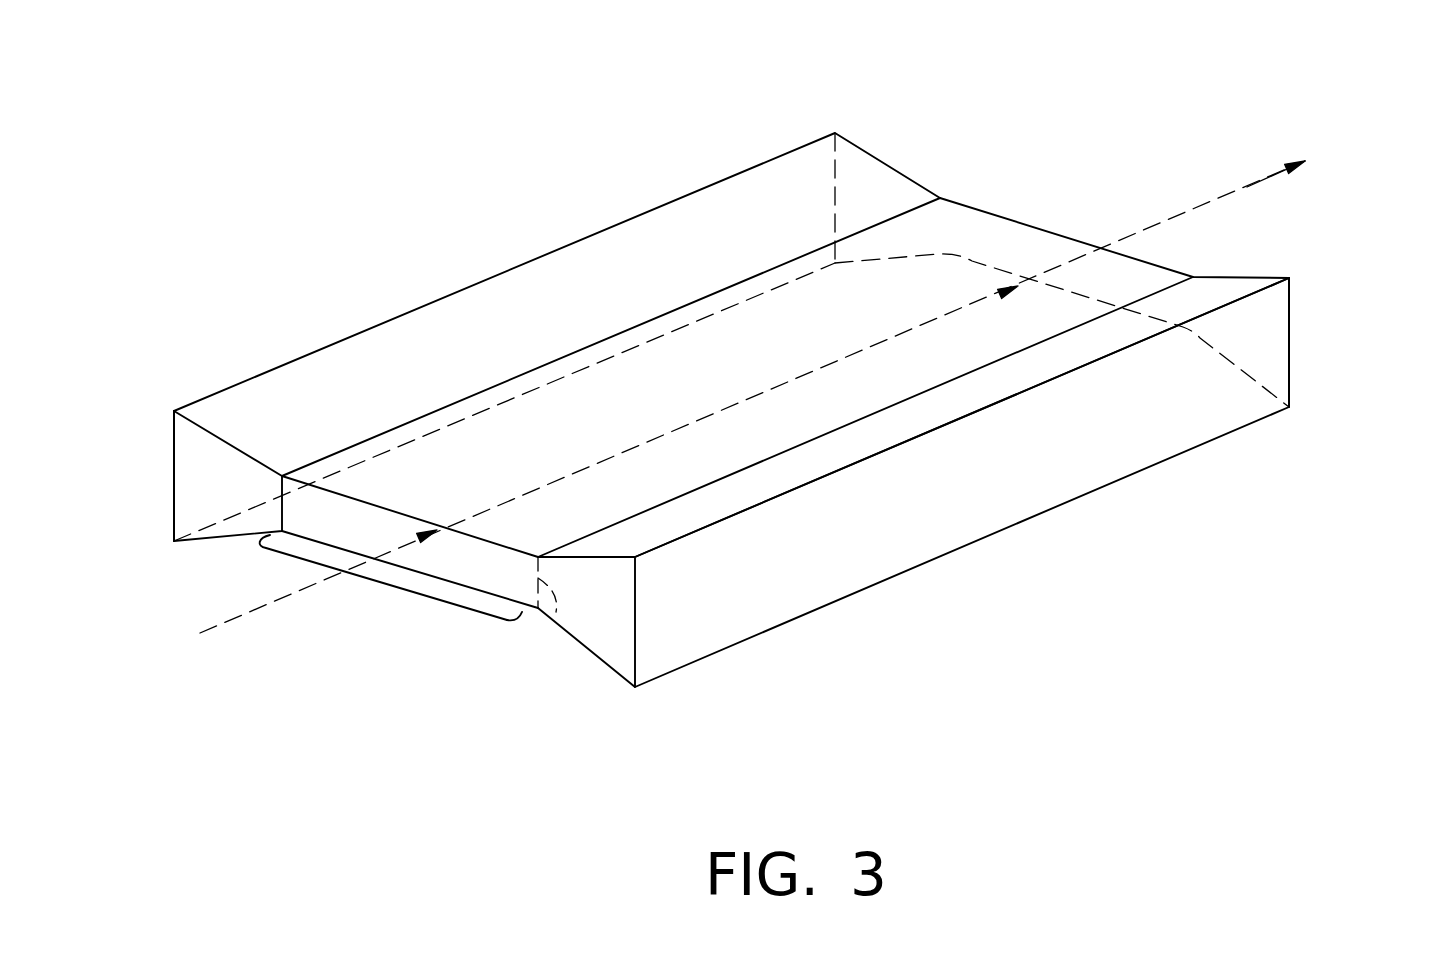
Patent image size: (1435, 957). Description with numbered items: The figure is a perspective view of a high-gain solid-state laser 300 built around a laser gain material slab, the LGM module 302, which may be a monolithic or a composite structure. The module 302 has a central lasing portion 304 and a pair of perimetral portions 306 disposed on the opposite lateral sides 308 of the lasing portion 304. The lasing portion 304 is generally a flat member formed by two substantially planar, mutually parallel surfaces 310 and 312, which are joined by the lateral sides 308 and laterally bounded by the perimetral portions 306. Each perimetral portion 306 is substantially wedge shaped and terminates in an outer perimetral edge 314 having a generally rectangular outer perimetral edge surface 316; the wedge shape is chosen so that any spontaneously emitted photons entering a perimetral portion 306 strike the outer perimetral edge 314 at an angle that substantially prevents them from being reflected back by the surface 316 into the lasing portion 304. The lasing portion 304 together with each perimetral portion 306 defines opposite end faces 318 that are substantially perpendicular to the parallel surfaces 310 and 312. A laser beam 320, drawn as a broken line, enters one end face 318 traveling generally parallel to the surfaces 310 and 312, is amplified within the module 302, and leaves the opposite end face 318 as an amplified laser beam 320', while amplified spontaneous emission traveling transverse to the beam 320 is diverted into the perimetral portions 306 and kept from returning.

The high-gain solid-state laser 300 is at (1017, 124).
The LGM slab or module 302 is at (973, 207).
The lasing portion 304 is at (400, 591).
The perimetral portions 306 is at (503, 272).
The lateral sides 308 is at (262, 520).
The planar surface 310 is at (481, 598).
The planar surface 312 is at (634, 417).
The outer perimetral edge 314 is at (174, 442).
The outer perimetral edge surface 316 is at (197, 490).
The end faces 318 is at (367, 533).
The laser beam 320 is at (752, 417).
The amplified laser beam 320' is at (1318, 192).